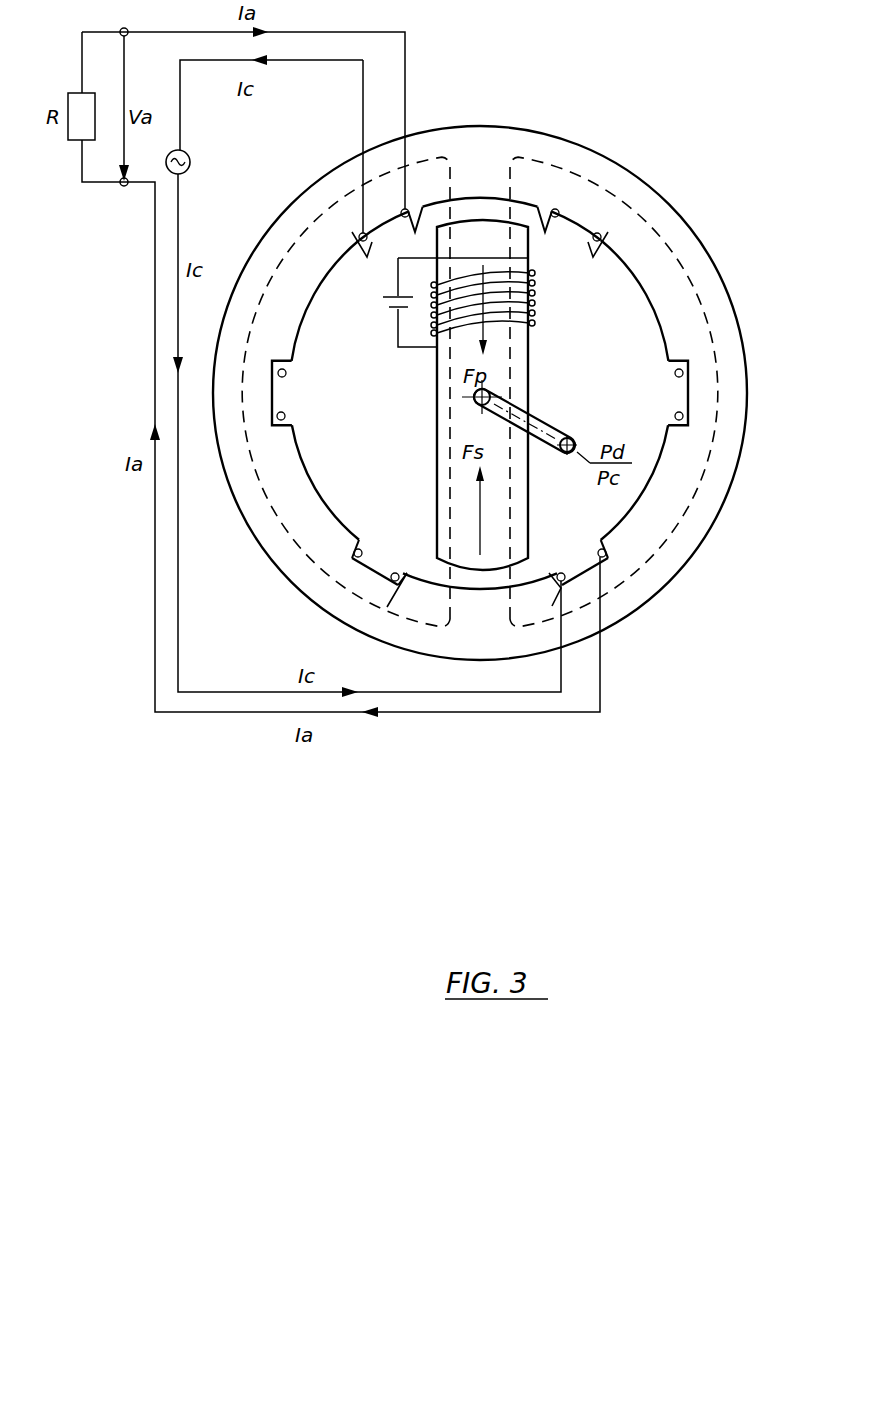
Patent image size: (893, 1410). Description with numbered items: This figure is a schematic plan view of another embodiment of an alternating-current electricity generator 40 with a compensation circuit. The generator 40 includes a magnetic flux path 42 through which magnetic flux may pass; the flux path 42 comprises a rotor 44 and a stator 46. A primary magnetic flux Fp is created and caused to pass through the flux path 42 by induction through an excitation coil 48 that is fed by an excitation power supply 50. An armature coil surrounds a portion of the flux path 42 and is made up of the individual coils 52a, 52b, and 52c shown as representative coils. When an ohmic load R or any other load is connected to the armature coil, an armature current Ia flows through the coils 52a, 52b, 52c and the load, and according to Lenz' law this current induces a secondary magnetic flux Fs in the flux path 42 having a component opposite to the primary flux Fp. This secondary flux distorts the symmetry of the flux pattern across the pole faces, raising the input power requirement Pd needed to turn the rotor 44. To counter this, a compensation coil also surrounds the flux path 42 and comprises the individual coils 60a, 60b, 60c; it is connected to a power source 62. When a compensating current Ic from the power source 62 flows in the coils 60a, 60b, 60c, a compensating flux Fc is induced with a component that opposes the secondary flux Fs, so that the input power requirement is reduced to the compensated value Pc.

The electrical generator 40 is at (604, 113).
The magnetic flux path 42 is at (647, 222).
The rotor 44 is at (530, 366).
The stator 46 is at (312, 480).
The excitation coil 48 is at (595, 302).
The excitation power supply 50 is at (374, 308).
The armature coil 52a is at (447, 201).
The armature coil 52b is at (348, 378).
The armature coil 52c is at (360, 549).
The compensation coil 60a is at (367, 255).
The compensation coil 60b is at (303, 416).
The compensation coil 60c is at (440, 607).
The power source 62 is at (193, 163).